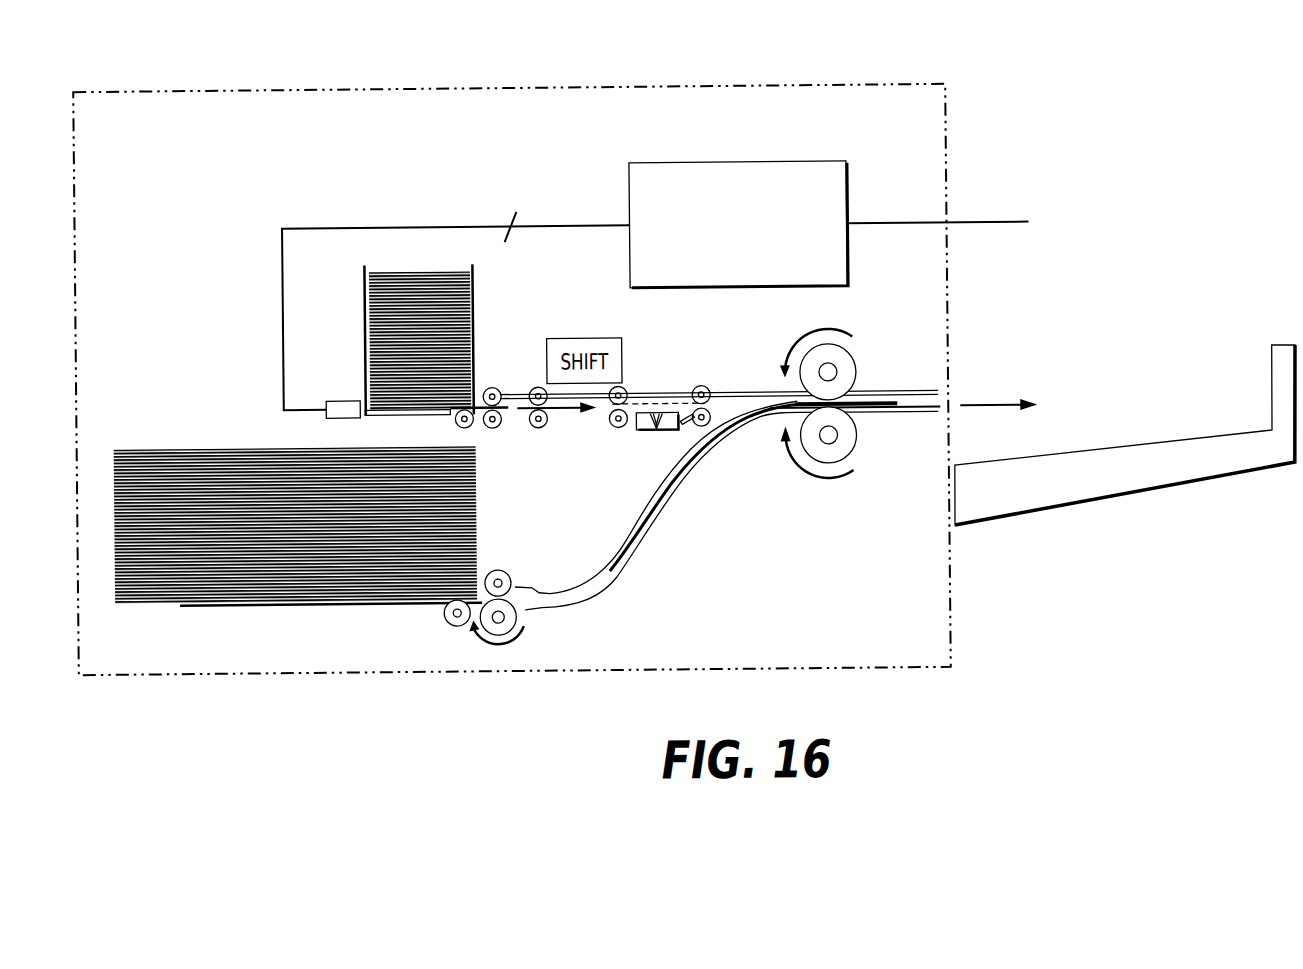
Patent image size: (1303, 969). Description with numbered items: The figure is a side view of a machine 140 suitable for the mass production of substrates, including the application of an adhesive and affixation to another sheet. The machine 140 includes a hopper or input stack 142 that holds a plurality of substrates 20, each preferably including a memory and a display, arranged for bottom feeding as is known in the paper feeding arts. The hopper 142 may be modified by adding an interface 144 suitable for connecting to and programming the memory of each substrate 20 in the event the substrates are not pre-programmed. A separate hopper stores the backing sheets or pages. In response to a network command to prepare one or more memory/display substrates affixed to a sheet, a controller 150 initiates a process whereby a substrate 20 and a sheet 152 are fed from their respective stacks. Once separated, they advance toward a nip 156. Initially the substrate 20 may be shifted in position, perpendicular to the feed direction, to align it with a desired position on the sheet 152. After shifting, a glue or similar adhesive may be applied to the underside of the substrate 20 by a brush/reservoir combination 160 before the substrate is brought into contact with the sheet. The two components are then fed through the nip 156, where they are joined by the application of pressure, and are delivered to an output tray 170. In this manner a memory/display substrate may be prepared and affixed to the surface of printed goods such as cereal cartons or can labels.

The machine 140 is at (220, 89).
The hopper or input stack 142 is at (392, 250).
The interface 144 is at (340, 399).
The controller 150 is at (742, 167).
The sheet 152 is at (331, 601).
The nip 156 is at (857, 403).
The brush/reservoir combination 160 is at (642, 444).
The output tray 170 is at (1099, 509).
The substrate 20 is at (505, 405).